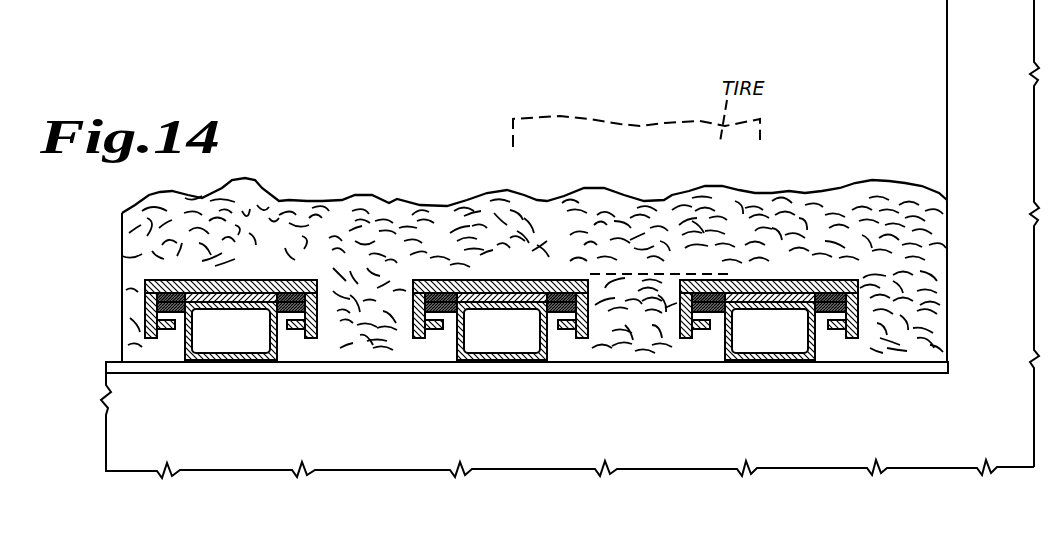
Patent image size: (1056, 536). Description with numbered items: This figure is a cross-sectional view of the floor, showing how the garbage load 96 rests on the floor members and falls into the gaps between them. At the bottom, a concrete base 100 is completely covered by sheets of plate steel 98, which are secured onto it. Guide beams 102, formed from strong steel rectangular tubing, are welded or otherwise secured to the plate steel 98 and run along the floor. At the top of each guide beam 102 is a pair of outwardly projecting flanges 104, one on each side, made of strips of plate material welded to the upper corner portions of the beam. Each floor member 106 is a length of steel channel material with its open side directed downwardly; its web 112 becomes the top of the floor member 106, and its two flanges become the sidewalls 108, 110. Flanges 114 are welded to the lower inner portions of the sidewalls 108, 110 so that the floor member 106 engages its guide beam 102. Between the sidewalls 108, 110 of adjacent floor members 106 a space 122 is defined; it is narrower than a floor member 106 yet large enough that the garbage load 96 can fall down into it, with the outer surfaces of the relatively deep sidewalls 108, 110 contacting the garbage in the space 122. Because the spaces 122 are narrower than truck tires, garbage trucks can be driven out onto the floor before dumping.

The garbage load 96 is at (394, 186).
The plate steel 98 is at (365, 368).
The concrete base 100 is at (247, 392).
The guide beam 102 is at (182, 353).
The outwardly projecting flange 104 is at (320, 281).
The floor member 106 is at (250, 286).
The sidewall 108 is at (147, 308).
The sidewall 110 is at (318, 315).
The web 112 is at (292, 280).
The flange 114 is at (169, 329).
The space 122 is at (387, 284).